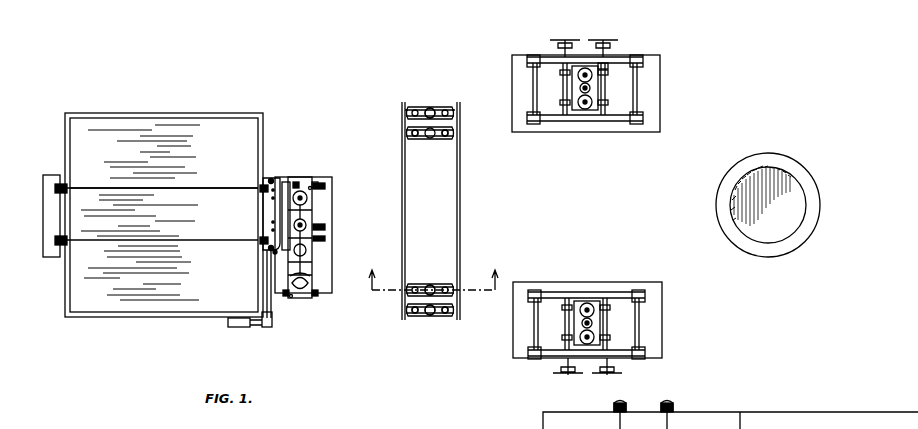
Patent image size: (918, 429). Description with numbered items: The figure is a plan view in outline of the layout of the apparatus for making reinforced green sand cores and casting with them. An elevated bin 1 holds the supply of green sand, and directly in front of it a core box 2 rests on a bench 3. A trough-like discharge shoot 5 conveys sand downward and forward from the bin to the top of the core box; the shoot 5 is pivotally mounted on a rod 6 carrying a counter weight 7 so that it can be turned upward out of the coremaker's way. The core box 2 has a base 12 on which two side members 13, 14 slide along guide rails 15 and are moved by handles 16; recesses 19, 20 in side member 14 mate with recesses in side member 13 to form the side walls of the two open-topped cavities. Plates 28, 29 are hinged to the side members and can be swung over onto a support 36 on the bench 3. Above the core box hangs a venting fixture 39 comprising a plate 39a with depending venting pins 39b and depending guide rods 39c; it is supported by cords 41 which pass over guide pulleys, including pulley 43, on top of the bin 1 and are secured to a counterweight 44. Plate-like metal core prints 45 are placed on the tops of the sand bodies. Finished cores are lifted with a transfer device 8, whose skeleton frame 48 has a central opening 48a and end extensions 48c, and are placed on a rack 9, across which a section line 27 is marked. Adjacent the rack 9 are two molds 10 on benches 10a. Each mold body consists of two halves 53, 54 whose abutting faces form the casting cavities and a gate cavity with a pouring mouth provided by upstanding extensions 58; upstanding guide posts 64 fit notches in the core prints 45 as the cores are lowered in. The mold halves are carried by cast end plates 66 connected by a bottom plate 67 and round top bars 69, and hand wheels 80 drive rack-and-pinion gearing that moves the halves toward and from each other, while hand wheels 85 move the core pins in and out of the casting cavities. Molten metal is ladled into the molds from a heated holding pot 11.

The elevated bin 1 is at (178, 130).
The core box 2 is at (312, 218).
The bench 3 is at (330, 290).
The discharge shoot 5 is at (287, 182).
The rod 6 is at (266, 278).
The counter weight 7 is at (238, 328).
The transfer device 8 is at (430, 140).
The rack 9 is at (462, 218).
The mold 10 is at (555, 122).
The bench 10a is at (625, 124).
The holding pot 11 is at (768, 154).
The base 12 is at (325, 190).
The side member 13 is at (268, 248).
The side member 14 is at (325, 228).
The guide rails 15 is at (312, 186).
The handles 16 is at (298, 182).
The recess 19 is at (318, 182).
The recess 20 is at (325, 240).
The section line 27 is at (433, 270).
The hinged plate 28 is at (290, 298).
The hinged plate 29 is at (304, 298).
The support 36 is at (318, 296).
The venting fixture 39 is at (268, 210).
The plate 39a is at (262, 240).
The venting pins 39b is at (260, 188).
The guide rods 39c is at (269, 180).
The cords 41 is at (152, 188).
The guide pulley 43 is at (52, 176).
The counterweight 44 is at (58, 214).
The core prints 45 is at (416, 108).
The skeleton frame 48 is at (435, 288).
The central opening 48a is at (434, 108).
The end extensions 48c is at (405, 110).
The mold half 53 is at (595, 82).
The mold half 54 is at (575, 90).
The upstanding extensions 58 is at (598, 95).
The guide posts 64 is at (605, 70).
The end plates 66 is at (533, 56).
The bottom plate 67 is at (645, 285).
The top bars 69 is at (608, 122).
The hand wheels 80 is at (606, 42).
The hand wheels 85 is at (565, 42).